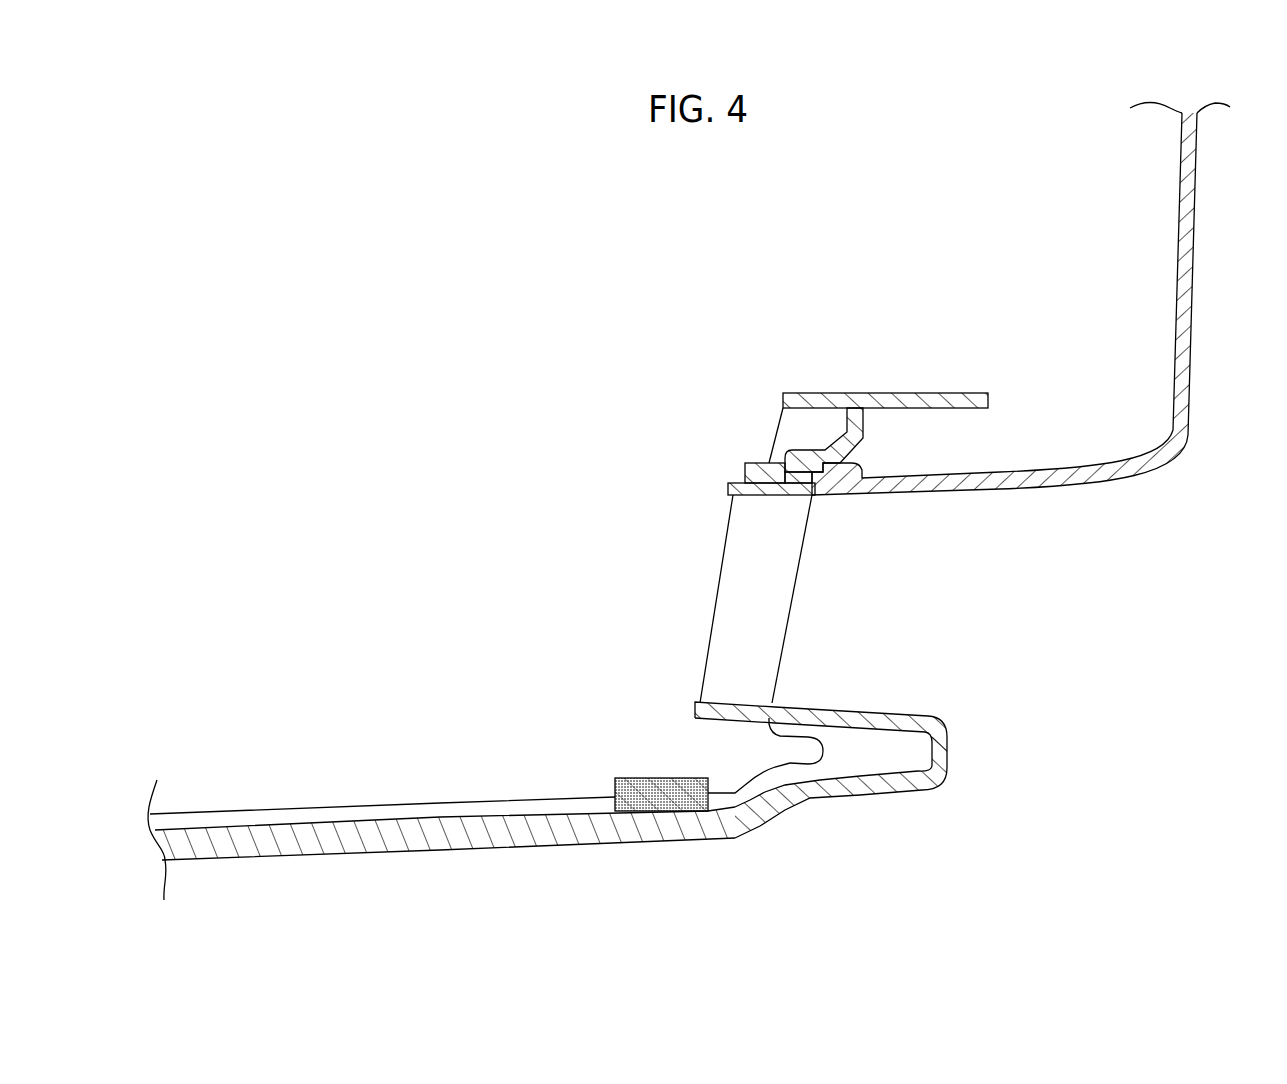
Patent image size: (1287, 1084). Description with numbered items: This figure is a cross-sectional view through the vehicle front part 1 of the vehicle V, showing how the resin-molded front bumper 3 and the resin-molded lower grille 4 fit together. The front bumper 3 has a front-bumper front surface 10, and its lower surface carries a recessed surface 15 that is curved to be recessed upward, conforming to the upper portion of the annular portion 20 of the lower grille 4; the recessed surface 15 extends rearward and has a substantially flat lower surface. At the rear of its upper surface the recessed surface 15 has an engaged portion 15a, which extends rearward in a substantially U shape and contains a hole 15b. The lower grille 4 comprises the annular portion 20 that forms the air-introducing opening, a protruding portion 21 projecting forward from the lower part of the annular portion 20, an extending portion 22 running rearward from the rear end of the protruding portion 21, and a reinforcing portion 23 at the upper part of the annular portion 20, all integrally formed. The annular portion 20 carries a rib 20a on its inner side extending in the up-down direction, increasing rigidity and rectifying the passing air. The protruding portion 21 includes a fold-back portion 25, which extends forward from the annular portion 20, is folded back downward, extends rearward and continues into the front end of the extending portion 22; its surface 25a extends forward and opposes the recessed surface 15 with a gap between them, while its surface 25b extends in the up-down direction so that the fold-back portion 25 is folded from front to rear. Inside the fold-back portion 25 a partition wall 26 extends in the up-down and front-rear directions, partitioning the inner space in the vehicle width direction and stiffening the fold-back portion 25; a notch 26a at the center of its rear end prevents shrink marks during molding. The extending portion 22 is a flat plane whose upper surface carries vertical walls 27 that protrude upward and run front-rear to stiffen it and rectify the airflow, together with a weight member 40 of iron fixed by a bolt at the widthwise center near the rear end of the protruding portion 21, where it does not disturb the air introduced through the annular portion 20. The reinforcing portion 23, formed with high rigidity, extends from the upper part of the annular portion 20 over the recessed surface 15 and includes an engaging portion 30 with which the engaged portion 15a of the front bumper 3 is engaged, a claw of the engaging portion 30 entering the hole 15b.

The vehicle front part 1 is at (576, 409).
The vehicle V is at (632, 374).
The front bumper 3 is at (999, 352).
The lower grille 4 is at (523, 628).
The front-bumper front surface 10 is at (1192, 284).
The recessed surface 15 is at (1027, 488).
The engaged portion 15a is at (757, 462).
The hole 15b is at (791, 487).
The annular portion 20 is at (709, 566).
The rib 20a is at (706, 653).
The protruding portion 21 is at (890, 743).
The extending portion 22 is at (467, 857).
The reinforcing portion 23 is at (841, 392).
The fold-back portion 25 is at (950, 719).
The surface 25a is at (877, 707).
The surface 25b is at (950, 749).
The partition wall 26 is at (898, 760).
The notch 26a is at (796, 747).
The vertical walls 27 is at (357, 810).
The engaging portion 30 is at (803, 449).
The weight member 40 is at (649, 777).